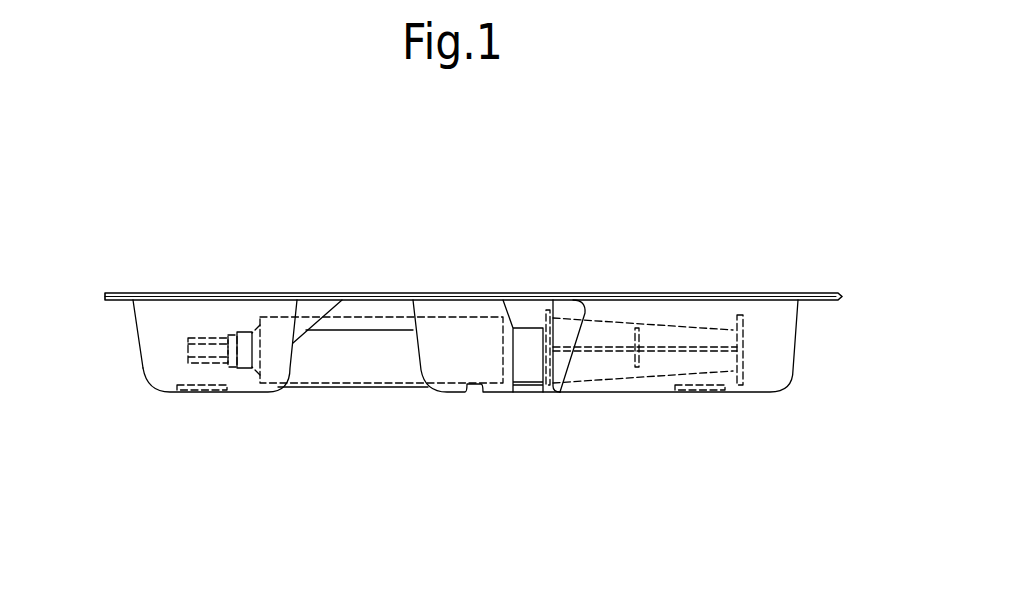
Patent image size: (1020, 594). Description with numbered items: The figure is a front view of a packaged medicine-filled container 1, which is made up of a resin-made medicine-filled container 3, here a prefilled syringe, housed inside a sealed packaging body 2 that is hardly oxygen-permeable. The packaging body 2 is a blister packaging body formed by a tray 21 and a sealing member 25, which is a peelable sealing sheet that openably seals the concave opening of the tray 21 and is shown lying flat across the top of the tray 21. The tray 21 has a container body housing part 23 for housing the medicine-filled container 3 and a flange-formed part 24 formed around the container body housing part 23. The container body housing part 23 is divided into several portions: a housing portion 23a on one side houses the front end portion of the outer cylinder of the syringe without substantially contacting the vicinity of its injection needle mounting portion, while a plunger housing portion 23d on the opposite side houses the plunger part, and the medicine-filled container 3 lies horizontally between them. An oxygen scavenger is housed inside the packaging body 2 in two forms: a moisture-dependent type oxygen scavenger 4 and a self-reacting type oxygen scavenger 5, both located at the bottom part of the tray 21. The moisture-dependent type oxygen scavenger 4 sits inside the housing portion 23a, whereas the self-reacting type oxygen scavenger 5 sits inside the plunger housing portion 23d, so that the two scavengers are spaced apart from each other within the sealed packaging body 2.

The packaged medicine-filled container 1 is at (245, 265).
The packaging body 2 is at (457, 373).
The medicine-filled container 3 is at (332, 357).
The moisture-dependent type oxygen scavenger 4 is at (195, 390).
The self-reacting type oxygen scavenger 5 is at (707, 388).
The tray 21 is at (393, 388).
The container body housing part 23 is at (615, 383).
The housing portion 23a is at (160, 365).
The plunger housing portion 23d is at (768, 373).
The flange-formed part 24 is at (168, 300).
The sealing member 25 is at (457, 297).